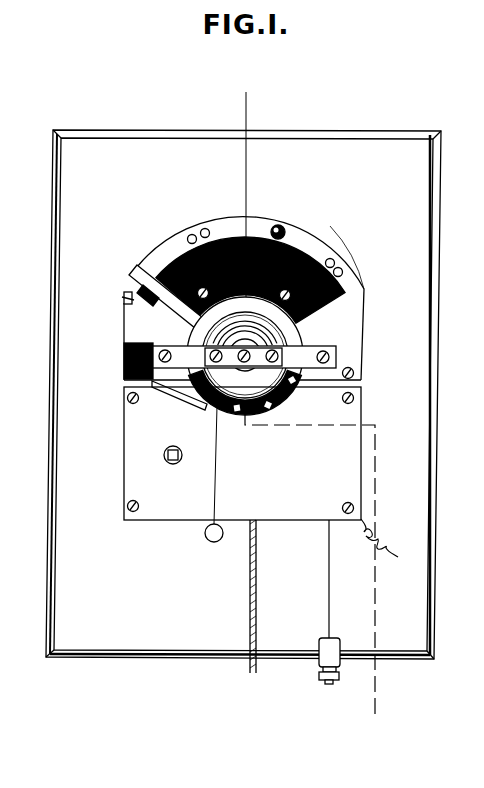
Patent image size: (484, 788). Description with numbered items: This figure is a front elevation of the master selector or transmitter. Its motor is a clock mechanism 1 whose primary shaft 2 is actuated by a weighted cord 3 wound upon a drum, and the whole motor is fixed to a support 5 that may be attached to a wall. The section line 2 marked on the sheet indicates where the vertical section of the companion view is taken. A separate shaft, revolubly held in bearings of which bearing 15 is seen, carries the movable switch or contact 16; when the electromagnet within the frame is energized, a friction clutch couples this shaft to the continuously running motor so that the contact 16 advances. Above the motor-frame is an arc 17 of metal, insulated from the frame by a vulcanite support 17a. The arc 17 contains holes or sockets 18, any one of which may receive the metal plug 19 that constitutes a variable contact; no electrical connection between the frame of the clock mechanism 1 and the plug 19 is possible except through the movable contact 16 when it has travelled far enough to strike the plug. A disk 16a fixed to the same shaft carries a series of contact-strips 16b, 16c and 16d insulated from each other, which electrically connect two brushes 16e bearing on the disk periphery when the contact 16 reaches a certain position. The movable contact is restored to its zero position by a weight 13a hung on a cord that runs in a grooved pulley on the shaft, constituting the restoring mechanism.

The clock mechanism 1 is at (242, 444).
The primary shaft 2 is at (309, 408).
The weighted cord 3 is at (249, 583).
The support 5 is at (243, 394).
The weight 13a is at (206, 539).
The bearing 15 is at (342, 348).
The movable switch or contact 16 is at (140, 276).
The disk 16a is at (296, 336).
The contact-strip 16b is at (296, 385).
The contact-strip 16c is at (270, 412).
The contact-strip 16d is at (238, 412).
The brushes 16e is at (180, 400).
The arc 17 is at (221, 222).
The vulcanite support 17a is at (308, 253).
The holes or sockets 18 is at (203, 228).
The metal plug 19 is at (285, 227).